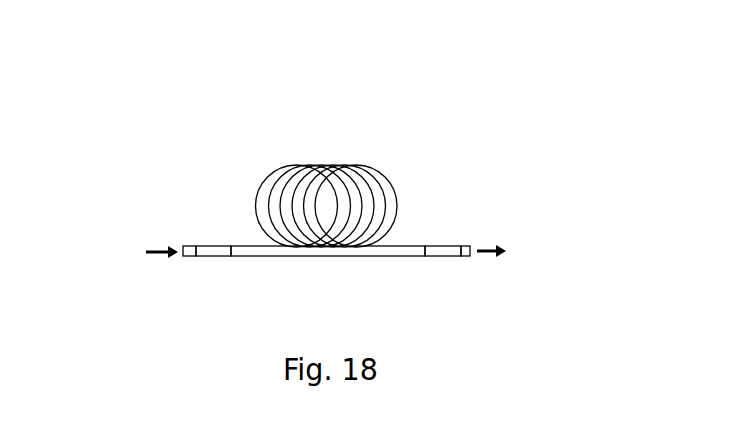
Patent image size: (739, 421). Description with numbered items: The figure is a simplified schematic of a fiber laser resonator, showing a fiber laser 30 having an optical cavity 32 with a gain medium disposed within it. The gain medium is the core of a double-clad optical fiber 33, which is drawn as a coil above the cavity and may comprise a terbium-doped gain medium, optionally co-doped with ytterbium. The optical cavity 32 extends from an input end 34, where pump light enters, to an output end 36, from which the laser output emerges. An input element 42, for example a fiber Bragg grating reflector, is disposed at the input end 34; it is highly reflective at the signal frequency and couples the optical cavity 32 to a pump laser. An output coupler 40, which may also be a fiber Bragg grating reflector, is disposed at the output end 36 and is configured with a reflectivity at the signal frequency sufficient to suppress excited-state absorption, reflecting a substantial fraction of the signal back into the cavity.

The fiber laser 30 is at (92, 42).
The optical cavity 32 is at (416, 122).
The double-clad optical fiber 33 is at (320, 165).
The input end 34 is at (185, 246).
The output end 36 is at (473, 245).
The output coupler 40 is at (443, 258).
The input element 42 is at (202, 257).